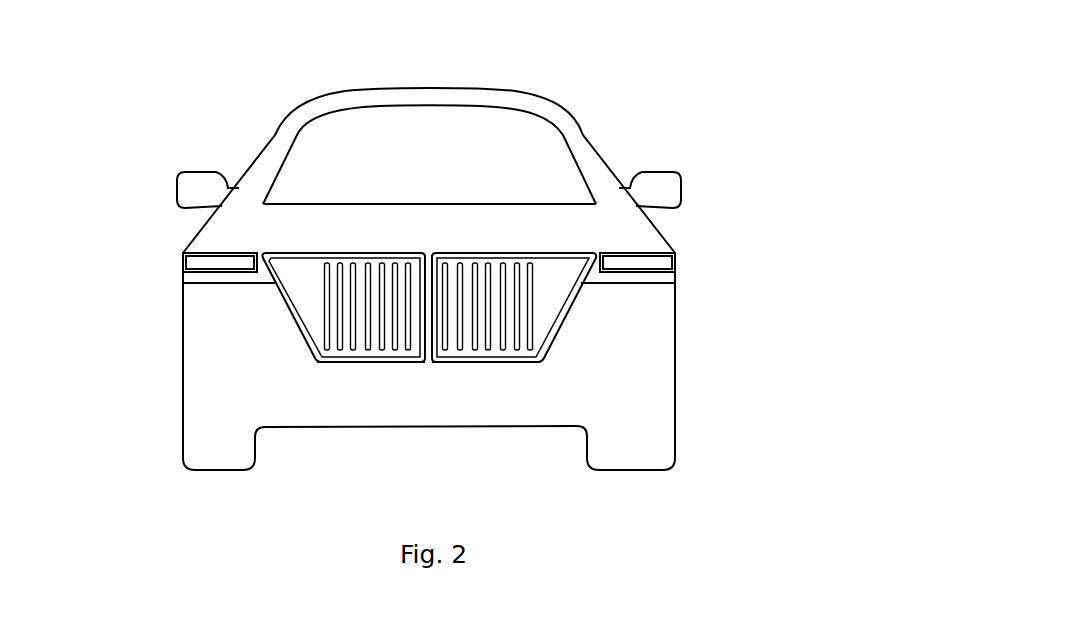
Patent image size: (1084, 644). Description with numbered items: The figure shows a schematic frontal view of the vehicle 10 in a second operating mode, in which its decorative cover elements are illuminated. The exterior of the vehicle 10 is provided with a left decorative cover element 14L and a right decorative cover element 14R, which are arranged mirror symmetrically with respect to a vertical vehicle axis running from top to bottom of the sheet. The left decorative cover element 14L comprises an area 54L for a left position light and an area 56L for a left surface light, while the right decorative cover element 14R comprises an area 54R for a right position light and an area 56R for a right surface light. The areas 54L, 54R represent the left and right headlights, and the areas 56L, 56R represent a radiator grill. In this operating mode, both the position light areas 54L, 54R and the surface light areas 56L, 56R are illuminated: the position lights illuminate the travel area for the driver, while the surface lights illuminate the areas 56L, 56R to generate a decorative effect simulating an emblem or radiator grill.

The vehicle 10 is at (637, 80).
The area for right position light 54R is at (193, 263).
The area for left position light 54L is at (657, 266).
The area for right surface light 56R is at (327, 317).
The area for left surface light 56L is at (531, 320).
The right decorative cover element 14R is at (404, 373).
The left decorative cover element 14L is at (461, 367).